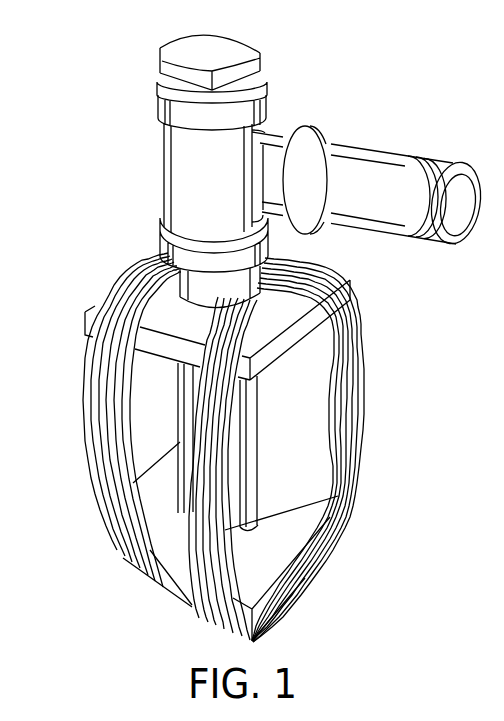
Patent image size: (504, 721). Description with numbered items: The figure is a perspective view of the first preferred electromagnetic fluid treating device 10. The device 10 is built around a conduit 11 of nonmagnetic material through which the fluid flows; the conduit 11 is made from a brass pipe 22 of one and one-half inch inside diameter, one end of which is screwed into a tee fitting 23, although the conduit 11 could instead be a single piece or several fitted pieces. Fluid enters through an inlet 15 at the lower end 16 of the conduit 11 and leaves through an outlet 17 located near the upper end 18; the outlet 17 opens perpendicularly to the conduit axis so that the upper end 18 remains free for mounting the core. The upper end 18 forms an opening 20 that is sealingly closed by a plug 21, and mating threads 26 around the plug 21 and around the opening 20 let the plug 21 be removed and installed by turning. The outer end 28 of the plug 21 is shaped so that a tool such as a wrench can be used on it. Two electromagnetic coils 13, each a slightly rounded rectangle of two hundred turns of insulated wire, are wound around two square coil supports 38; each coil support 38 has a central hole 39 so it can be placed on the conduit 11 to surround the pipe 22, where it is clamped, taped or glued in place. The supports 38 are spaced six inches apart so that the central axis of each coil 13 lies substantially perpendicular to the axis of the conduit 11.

The electromagnetic fluid treating device 10 is at (132, 228).
The conduit 11 is at (292, 260).
The electromagnetic coils 13 is at (365, 358).
The inlet 15 is at (179, 612).
The lower end 16 is at (243, 533).
The outlet 17 is at (330, 135).
The upper end 18 is at (160, 110).
The opening 20 is at (158, 92).
The plug 21 is at (258, 52).
The brass pipe 22 is at (258, 406).
The tee fitting 23 is at (283, 130).
The mating threads 26 is at (265, 83).
The outer end 28 is at (202, 40).
The coil supports 38 is at (302, 328).
The central hole 39 is at (213, 308).